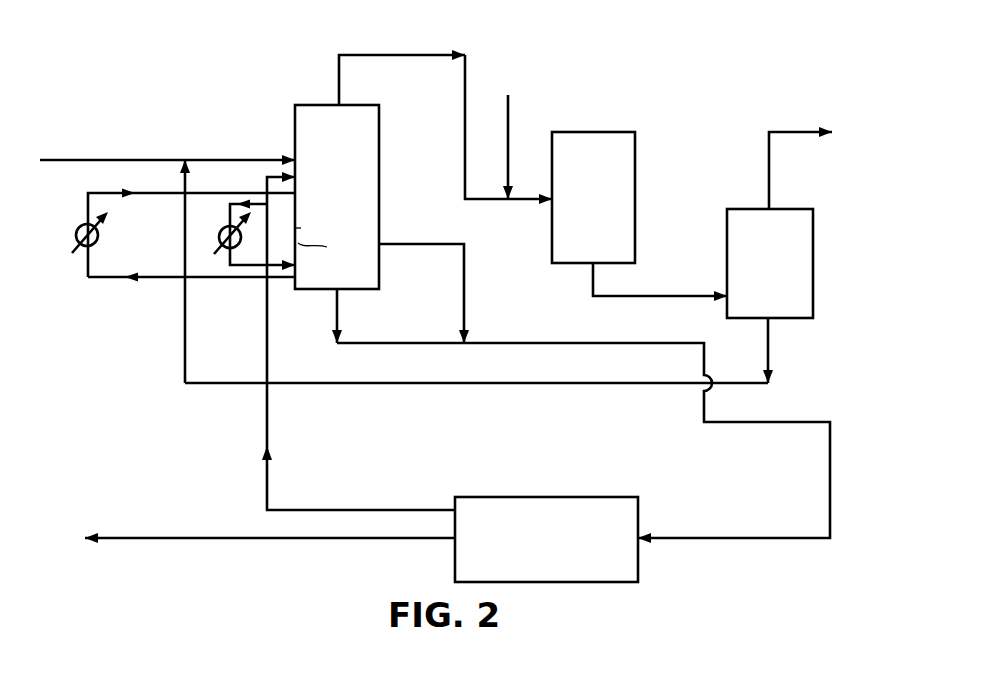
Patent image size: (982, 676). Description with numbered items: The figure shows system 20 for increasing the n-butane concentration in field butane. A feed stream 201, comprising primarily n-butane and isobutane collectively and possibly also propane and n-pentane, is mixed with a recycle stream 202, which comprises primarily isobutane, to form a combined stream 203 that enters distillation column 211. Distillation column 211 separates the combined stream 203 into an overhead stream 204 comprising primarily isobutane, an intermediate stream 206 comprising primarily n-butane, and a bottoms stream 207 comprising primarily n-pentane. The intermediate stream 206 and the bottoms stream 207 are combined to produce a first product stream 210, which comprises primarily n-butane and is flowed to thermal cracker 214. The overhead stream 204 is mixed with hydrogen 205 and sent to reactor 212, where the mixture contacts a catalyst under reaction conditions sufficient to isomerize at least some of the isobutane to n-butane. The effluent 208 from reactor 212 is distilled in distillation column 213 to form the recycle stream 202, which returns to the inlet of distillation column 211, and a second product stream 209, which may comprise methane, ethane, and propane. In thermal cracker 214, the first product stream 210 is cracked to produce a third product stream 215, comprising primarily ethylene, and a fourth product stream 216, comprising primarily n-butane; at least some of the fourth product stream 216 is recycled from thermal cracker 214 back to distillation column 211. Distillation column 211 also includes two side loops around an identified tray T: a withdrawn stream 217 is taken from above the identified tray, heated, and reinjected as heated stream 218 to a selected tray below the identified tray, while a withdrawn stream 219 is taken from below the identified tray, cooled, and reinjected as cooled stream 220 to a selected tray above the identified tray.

The system 20 is at (153, 19).
The feed stream 201 is at (112, 158).
The recycle stream 202 is at (183, 337).
The combined stream 203 is at (252, 158).
The overhead stream 204 is at (342, 78).
The hydrogen 205 is at (511, 115).
The intermediate stream 206 is at (413, 243).
The bottoms stream 207 is at (412, 342).
The effluent 208 is at (592, 278).
The second product stream 209 is at (792, 131).
The first product stream 210 is at (533, 344).
The distillation column 211 is at (337, 197).
The reactor 212 is at (593, 197).
The distillation column 213 is at (770, 296).
The thermal cracker 214 is at (568, 497).
The third product stream 215 is at (175, 537).
The fourth product stream 216 is at (362, 509).
The withdrawn stream 217 is at (253, 203).
The heated stream 218 is at (262, 268).
The withdrawn stream 219 is at (110, 278).
The cooled stream 220 is at (162, 192).